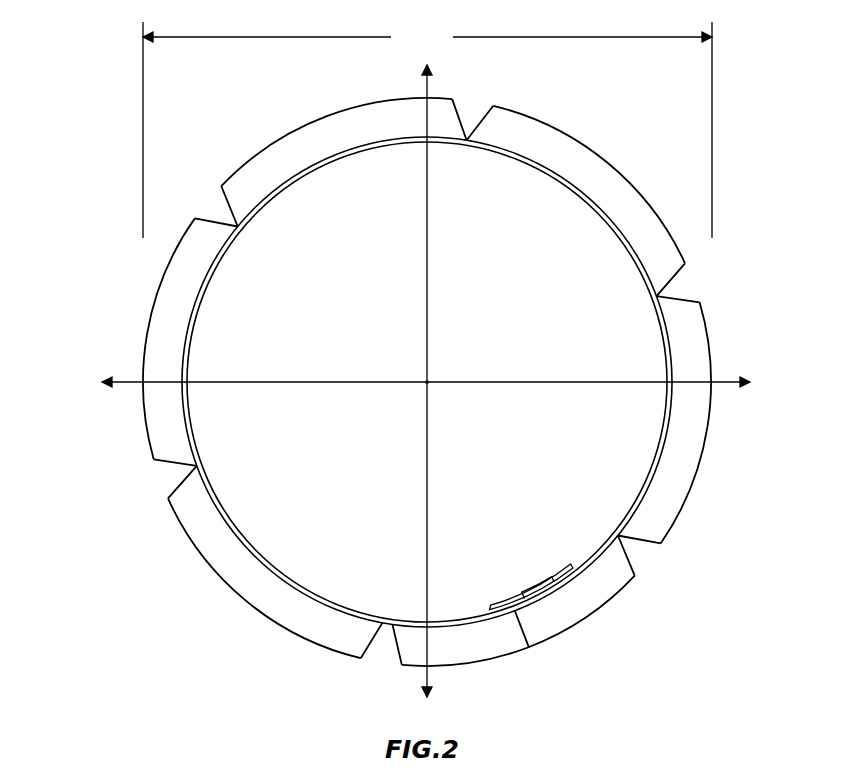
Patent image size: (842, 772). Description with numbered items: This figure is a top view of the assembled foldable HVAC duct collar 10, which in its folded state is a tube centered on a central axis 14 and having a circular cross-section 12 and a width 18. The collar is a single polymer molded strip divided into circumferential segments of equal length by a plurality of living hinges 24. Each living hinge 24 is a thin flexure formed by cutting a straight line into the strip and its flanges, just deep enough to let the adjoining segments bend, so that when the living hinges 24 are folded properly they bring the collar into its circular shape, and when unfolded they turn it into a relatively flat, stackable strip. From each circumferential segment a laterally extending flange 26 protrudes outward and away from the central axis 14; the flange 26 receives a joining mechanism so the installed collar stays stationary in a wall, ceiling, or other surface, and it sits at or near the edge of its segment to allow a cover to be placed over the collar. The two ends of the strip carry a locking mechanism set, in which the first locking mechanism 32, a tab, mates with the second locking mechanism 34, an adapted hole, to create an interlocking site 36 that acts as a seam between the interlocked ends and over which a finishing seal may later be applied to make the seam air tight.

The HVAC duct collar 10 is at (92, 133).
The circular cross-section 12 is at (730, 382).
The central axis 14 is at (425, 380).
The width 18 is at (427, 130).
The living hinge 24 is at (467, 142).
The flange 26 is at (318, 135).
The first locking mechanism 32 is at (545, 572).
The second locking mechanism 34 is at (533, 587).
The interlocking site 36 is at (527, 625).